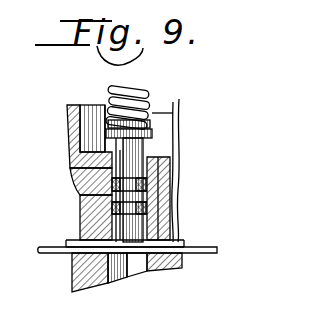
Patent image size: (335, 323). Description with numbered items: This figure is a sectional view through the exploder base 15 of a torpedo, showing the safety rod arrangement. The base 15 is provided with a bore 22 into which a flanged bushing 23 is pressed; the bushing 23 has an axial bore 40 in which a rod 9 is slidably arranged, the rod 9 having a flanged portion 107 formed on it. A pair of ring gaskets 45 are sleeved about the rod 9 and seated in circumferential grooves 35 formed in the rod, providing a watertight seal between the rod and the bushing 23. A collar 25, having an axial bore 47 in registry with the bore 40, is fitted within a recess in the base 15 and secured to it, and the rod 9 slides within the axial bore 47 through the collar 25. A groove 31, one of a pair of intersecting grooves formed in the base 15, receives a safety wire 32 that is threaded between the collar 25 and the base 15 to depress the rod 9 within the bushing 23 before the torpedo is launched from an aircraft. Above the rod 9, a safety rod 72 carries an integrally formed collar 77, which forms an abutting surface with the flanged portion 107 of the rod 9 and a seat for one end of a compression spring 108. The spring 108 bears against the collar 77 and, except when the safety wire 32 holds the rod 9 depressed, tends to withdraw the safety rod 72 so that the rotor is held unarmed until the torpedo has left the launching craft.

The base 15 is at (67, 140).
The axial bore 40 is at (112, 169).
The ring gaskets 45 is at (112, 207).
The safety rod 72 is at (125, 96).
The compression spring 108 is at (148, 103).
The collar 77 is at (148, 120).
The flanged portion 107 is at (150, 131).
The rod 9 is at (143, 137).
The flanged bushing 23 is at (160, 162).
The circumferential grooves 35 is at (126, 193).
The bore 22 is at (178, 202).
The safety wire 32 is at (40, 247).
The collar 25 is at (72, 273).
The axial bore 47 is at (147, 271).
The groove 31 is at (187, 258).